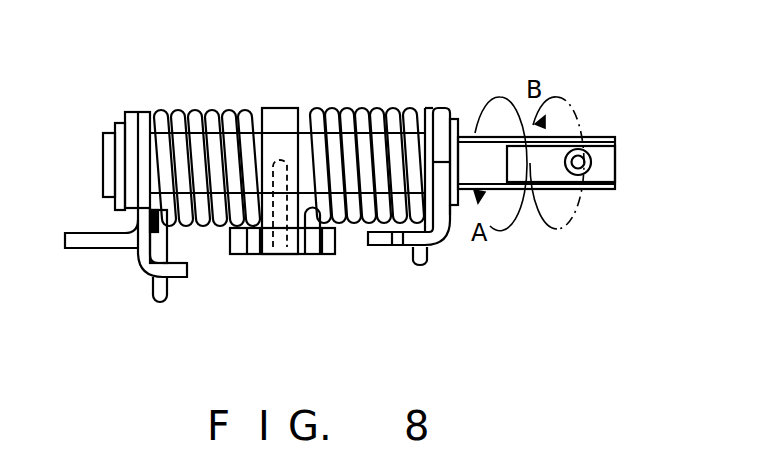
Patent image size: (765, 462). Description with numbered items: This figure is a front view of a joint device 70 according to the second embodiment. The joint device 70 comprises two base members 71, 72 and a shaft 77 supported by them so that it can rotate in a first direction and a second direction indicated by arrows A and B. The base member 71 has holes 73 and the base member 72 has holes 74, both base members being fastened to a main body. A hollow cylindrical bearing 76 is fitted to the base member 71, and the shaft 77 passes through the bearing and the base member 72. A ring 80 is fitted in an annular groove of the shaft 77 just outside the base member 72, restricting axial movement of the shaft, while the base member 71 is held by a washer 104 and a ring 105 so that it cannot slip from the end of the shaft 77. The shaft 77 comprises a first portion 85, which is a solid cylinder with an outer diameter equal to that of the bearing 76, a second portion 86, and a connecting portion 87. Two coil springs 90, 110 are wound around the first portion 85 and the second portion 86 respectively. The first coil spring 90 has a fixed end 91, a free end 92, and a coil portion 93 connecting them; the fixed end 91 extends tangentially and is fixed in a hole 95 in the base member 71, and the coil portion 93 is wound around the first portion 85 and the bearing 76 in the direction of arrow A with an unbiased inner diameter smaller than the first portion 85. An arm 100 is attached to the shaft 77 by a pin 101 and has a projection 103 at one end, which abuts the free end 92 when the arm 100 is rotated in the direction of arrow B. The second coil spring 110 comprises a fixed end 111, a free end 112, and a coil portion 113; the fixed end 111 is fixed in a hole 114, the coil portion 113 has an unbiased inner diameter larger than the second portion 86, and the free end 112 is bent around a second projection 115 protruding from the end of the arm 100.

The joint device 70 is at (112, 82).
The first coil spring 90 is at (163, 93).
The bearing 76 is at (181, 108).
The coil portion 93 is at (200, 108).
The first portion 85 is at (233, 108).
The washer 104 is at (122, 111).
The ring 105 is at (112, 130).
The holes 73 is at (92, 233).
The base member 71 is at (137, 265).
The fixed end 91 is at (153, 286).
The hole 95 is at (173, 272).
The projection 103 is at (235, 232).
The free end 92 is at (248, 232).
The arm 100 is at (283, 94).
The pin 101 is at (282, 252).
The free end 112 is at (310, 258).
The second projection 115 is at (335, 237).
The coil portion 113 is at (332, 107).
The second portion 86 is at (365, 106).
The second coil spring 110 is at (407, 94).
The base member 72 is at (437, 238).
The ring 80 is at (452, 106).
The shaft 77 is at (464, 134).
The connecting portion 87 is at (606, 158).
The fixed end 111 is at (421, 265).
The hole 114 is at (404, 250).
The holes 74 is at (393, 250).